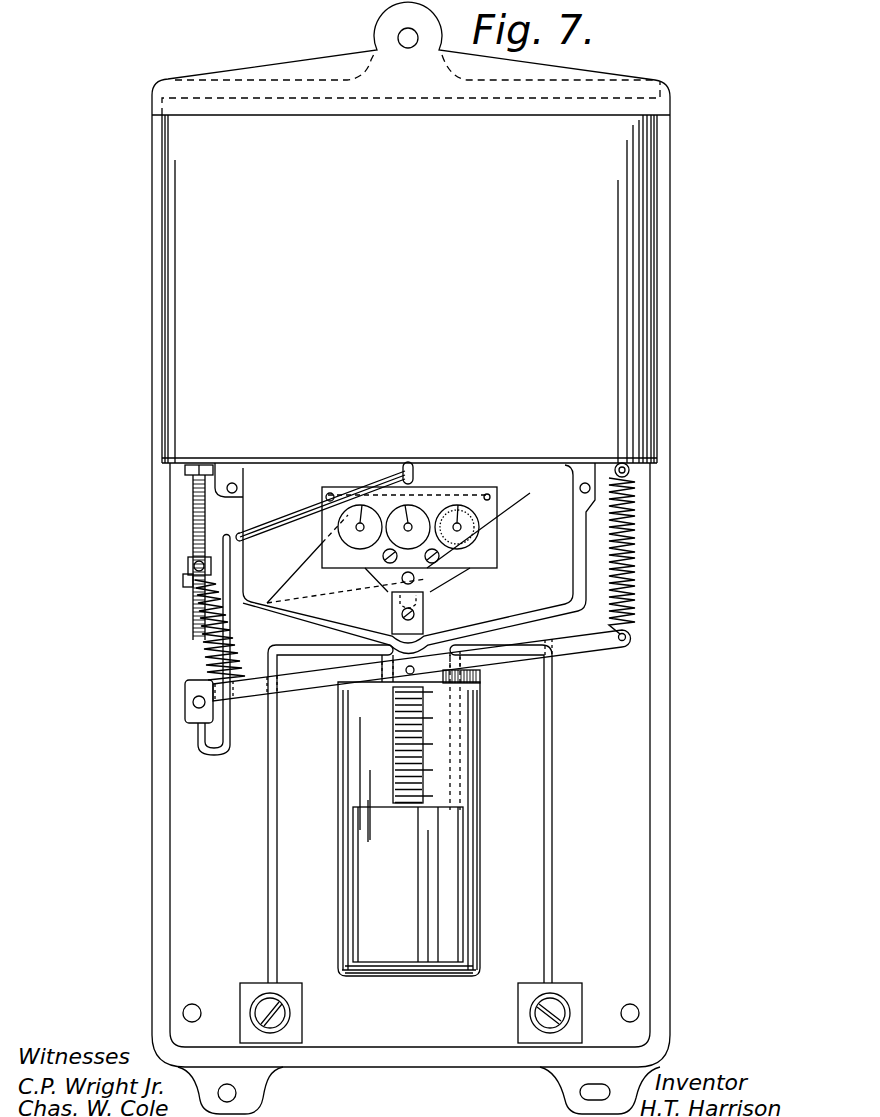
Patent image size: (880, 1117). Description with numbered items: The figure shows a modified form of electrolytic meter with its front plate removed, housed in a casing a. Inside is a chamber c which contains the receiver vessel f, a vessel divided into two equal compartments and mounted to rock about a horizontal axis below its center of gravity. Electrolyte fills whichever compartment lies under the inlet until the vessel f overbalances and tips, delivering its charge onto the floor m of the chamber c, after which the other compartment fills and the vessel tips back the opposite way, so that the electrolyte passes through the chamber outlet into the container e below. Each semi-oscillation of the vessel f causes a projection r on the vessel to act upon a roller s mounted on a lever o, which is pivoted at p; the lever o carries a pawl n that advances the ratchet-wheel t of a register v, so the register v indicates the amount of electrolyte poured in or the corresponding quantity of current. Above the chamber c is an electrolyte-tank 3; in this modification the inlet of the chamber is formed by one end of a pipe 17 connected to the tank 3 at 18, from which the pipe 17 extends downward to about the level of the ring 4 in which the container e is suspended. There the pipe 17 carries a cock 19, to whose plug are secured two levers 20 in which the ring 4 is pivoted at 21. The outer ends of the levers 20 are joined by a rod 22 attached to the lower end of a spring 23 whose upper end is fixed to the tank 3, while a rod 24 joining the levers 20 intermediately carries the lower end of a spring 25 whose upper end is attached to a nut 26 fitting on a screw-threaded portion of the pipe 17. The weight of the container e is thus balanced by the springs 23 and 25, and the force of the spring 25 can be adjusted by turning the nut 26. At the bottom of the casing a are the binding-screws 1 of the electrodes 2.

The binding-screws 1 is at (283, 1015).
The electrodes 2 is at (409, 823).
The electrolyte-tank 3 is at (411, 289).
The ring 4 is at (330, 668).
The pipe 17 is at (284, 512).
The connection of pipe to tank 18 is at (202, 470).
The cock 19 is at (185, 706).
The levers 20 is at (320, 690).
The pivot of ring 21 is at (413, 673).
The rod 22 is at (620, 642).
The spring 23 is at (632, 590).
The rod 24 is at (243, 712).
The spring 25 is at (195, 626).
The nut 26 is at (188, 566).
The casing a is at (665, 540).
The chamber c is at (240, 551).
The container e is at (350, 806).
The vessel f is at (407, 546).
The floor m is at (518, 620).
The pawl n is at (470, 512).
The lever o is at (455, 500).
The pivot p is at (328, 495).
The projection r is at (400, 522).
The roller s is at (415, 478).
The ratchet-wheel t is at (440, 575).
The register v is at (409, 560).